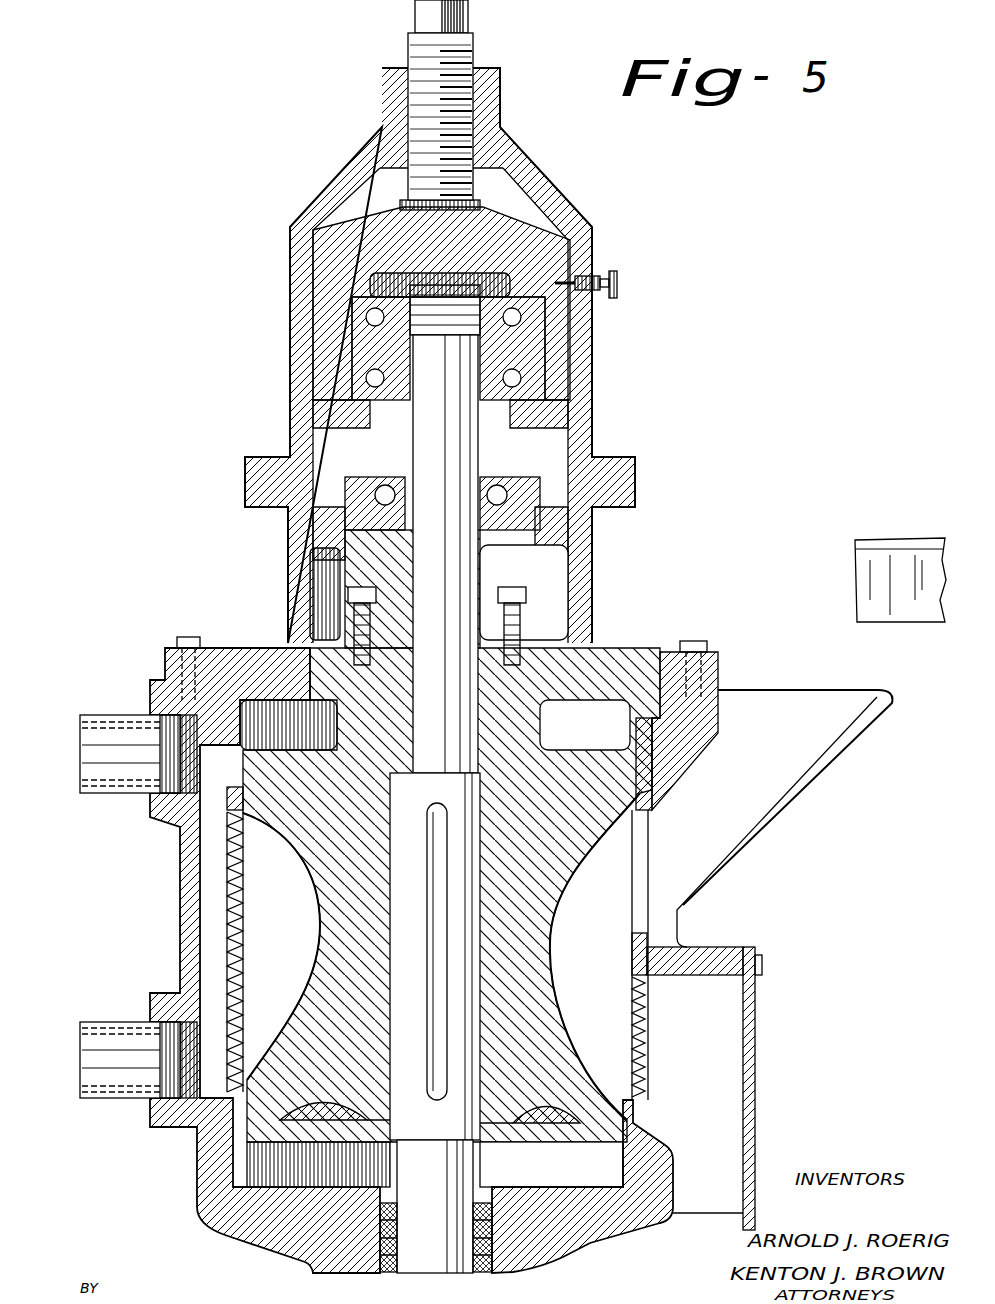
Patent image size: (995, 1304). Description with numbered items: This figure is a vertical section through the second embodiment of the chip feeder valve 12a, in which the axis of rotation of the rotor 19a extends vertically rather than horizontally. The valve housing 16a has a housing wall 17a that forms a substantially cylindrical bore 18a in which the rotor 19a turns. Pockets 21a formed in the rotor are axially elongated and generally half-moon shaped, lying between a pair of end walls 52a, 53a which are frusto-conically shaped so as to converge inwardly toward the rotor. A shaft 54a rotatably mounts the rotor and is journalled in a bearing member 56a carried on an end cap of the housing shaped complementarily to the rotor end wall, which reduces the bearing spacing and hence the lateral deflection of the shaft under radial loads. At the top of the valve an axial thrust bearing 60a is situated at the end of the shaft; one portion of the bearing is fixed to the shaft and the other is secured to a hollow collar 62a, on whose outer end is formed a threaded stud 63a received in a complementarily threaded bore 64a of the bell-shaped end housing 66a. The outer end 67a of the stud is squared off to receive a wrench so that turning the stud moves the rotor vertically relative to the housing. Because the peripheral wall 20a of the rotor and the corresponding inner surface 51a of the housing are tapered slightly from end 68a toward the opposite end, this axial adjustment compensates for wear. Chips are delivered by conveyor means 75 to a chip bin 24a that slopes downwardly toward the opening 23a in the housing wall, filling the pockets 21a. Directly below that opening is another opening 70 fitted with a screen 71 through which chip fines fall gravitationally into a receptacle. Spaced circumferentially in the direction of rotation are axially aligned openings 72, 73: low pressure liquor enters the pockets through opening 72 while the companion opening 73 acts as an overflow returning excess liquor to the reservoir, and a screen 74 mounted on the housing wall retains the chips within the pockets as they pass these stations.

The chip feeder valve 12a is at (662, 462).
The valve housing 16a is at (586, 1238).
The housing wall 17a is at (682, 942).
The cylindrical bore 18a is at (196, 1152).
The rotor 19a is at (562, 860).
The peripheral wall 20a is at (228, 815).
The pockets 21a is at (312, 892).
The opening 23a is at (646, 838).
The chip bin 24a is at (812, 702).
The inner surface 51a is at (650, 806).
The end wall 52a is at (558, 1120).
The end wall 53a is at (562, 792).
The shaft 54a is at (428, 1216).
The bearing member 56a is at (525, 500).
The axial thrust bearing 60a is at (510, 347).
The hollow collar 62a is at (372, 232).
The threaded stud 63a is at (425, 66).
The threaded bore 64a is at (462, 108).
The bell-shaped end housing 66a is at (535, 178).
The outer end of stud 67a is at (470, 20).
The end of rotor 68a is at (636, 760).
The opening 70 is at (647, 986).
The screen 71 is at (647, 1031).
The opening 72 is at (133, 1022).
The opening 73 is at (135, 718).
The screen 74 is at (230, 865).
The conveyor means 75 is at (892, 575).